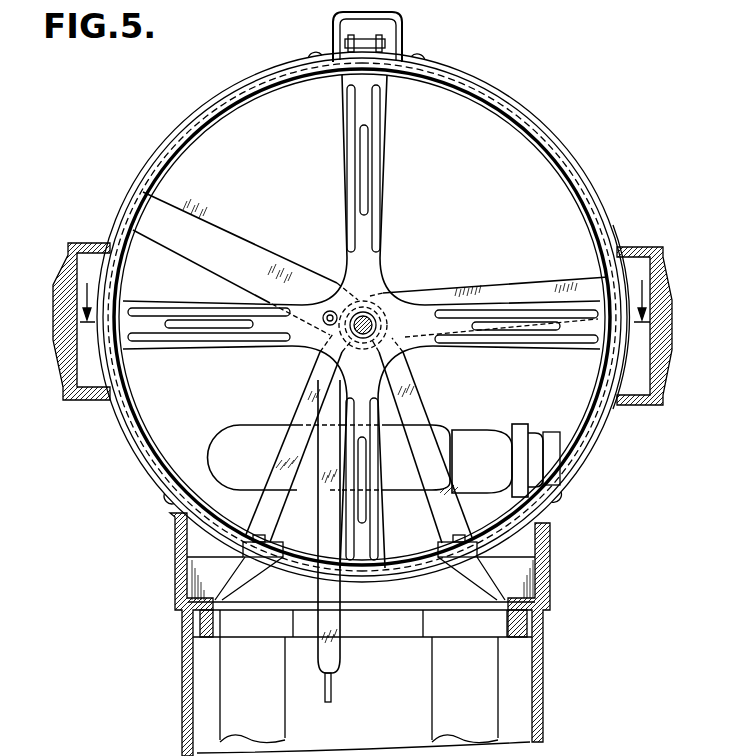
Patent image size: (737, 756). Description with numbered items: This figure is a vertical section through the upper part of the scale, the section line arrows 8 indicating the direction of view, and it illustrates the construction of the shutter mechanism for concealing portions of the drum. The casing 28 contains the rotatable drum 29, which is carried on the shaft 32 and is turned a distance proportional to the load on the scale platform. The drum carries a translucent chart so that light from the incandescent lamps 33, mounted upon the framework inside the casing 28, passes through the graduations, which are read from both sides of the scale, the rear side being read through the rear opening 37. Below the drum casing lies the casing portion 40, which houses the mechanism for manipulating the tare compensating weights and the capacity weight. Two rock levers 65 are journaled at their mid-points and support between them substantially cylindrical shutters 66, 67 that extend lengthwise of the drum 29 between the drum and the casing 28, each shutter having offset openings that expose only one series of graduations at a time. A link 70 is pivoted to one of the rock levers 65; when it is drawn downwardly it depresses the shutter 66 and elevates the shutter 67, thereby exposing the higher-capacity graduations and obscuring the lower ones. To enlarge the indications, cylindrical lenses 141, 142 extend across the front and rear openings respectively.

The section line arrows 8 is at (365, 312).
The casing 28 is at (583, 178).
The rotatable drum 29 is at (496, 112).
The shaft 32 is at (368, 320).
The incandescent lamps 33 is at (262, 405).
The rear opening 37 is at (621, 301).
The casing portion 40 is at (531, 702).
The rock levers 65 is at (266, 258).
The shutter 66 is at (113, 368).
The shutter 67 is at (608, 385).
The link 70 is at (323, 520).
The cylindrical lens 141 is at (53, 345).
The cylindrical lens 142 is at (668, 348).